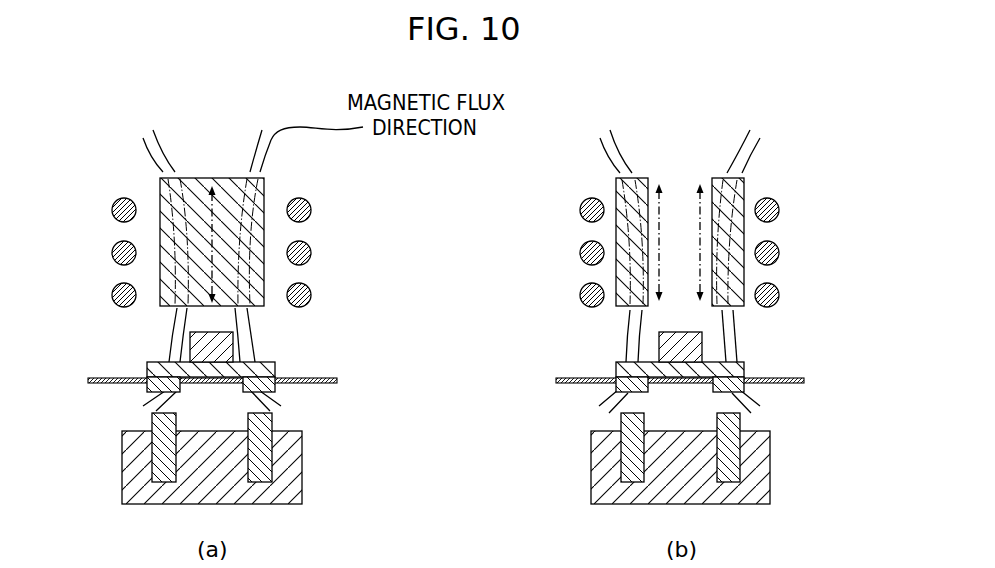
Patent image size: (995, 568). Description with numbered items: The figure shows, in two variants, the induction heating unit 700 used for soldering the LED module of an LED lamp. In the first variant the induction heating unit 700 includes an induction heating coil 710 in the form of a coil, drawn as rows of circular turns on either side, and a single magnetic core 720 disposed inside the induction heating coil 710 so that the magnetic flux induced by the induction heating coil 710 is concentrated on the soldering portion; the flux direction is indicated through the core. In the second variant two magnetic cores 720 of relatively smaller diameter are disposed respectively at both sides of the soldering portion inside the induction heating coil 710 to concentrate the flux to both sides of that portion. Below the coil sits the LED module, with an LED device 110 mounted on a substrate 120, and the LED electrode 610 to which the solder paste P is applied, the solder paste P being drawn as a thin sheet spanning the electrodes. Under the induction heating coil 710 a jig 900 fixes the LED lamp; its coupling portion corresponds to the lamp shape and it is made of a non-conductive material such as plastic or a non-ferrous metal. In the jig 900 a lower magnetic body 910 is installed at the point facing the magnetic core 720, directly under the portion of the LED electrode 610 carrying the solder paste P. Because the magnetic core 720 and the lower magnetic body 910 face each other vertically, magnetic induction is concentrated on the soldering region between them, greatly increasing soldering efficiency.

The LED device 110 is at (195, 337).
The substrate 120 is at (277, 360).
The LED electrode 610 is at (337, 380).
The induction heating unit 700 is at (233, 133).
The induction heating coil 710 is at (308, 203).
The magnetic core 720 is at (260, 306).
The jig 900 is at (287, 494).
The lower magnetic body 910 is at (267, 445).
The solder paste P is at (147, 380).